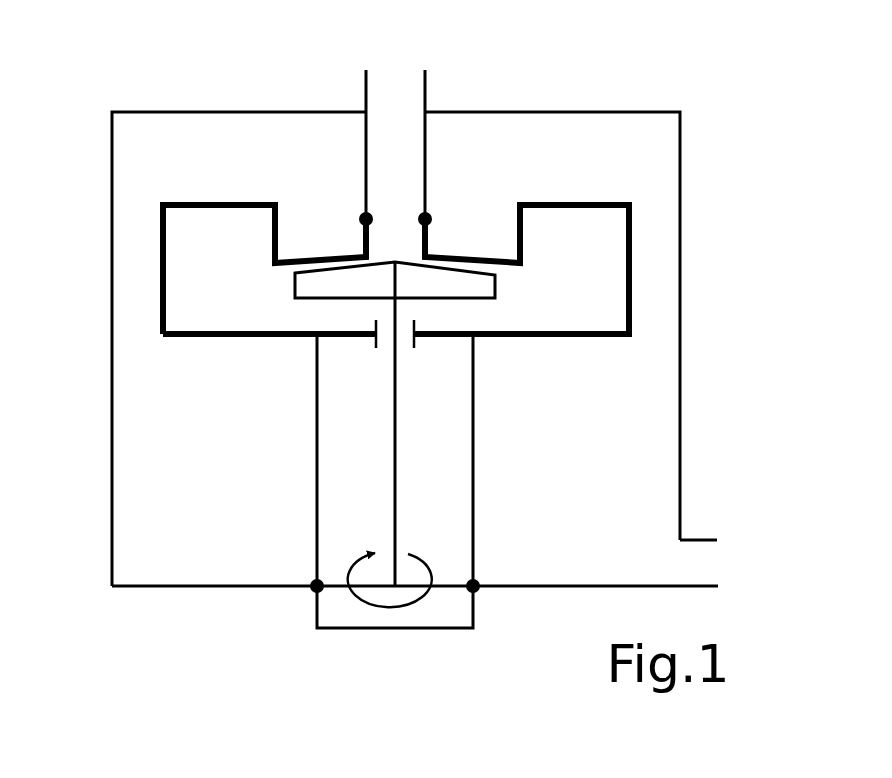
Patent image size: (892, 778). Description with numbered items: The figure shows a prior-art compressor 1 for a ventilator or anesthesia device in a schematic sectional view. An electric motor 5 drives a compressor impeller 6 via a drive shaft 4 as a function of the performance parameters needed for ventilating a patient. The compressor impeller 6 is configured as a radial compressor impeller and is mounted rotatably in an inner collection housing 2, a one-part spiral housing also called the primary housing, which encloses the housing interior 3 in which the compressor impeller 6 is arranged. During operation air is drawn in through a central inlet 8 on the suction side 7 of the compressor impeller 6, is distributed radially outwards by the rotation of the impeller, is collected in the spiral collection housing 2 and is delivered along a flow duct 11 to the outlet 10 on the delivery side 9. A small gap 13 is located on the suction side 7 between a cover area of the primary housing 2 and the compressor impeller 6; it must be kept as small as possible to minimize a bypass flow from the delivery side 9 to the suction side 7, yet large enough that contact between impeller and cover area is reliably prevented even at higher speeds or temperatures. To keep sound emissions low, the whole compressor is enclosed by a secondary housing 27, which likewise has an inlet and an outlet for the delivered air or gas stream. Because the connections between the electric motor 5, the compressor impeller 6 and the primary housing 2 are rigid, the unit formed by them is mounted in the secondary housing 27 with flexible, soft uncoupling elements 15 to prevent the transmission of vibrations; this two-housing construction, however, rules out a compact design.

The compressor 1 is at (745, 193).
The inner collection housing 2 is at (250, 203).
The housing interior 3 is at (182, 230).
The drive shaft 4 is at (397, 460).
The electric motor 5 is at (345, 495).
The compressor impeller 6 is at (330, 283).
The suction side 7 is at (418, 249).
The central inlet 8 is at (398, 105).
The delivery side 9 is at (236, 289).
The outlet 10 is at (690, 567).
The flow duct 11 is at (497, 290).
The gap 13 is at (483, 260).
The uncoupling elements 15 is at (425, 216).
The secondary housing 27 is at (681, 372).